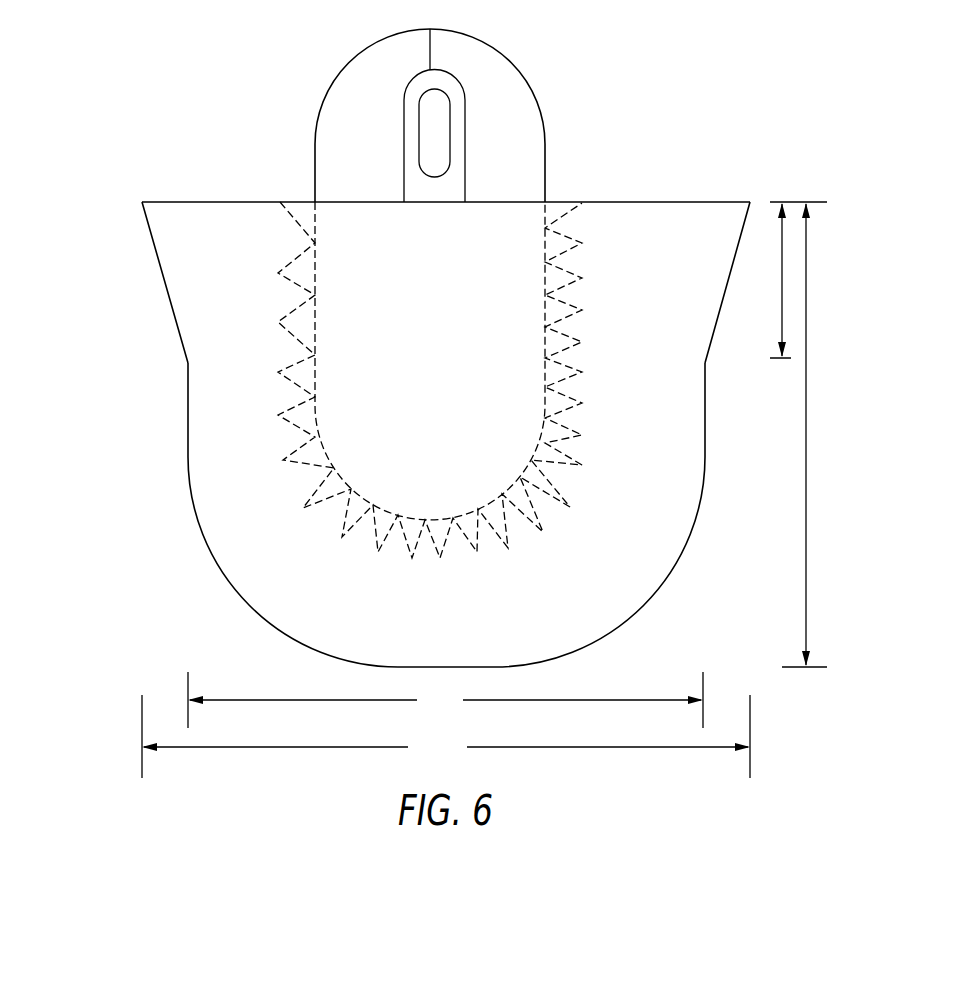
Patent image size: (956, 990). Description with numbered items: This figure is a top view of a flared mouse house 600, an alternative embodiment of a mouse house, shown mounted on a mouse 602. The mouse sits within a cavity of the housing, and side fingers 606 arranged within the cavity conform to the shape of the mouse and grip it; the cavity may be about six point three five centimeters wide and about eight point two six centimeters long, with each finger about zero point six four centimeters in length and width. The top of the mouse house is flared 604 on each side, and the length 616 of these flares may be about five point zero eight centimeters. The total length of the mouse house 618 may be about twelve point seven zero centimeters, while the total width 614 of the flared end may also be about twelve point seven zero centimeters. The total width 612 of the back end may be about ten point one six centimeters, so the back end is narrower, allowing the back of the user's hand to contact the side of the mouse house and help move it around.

The flared mouse house 600 is at (634, 180).
The mouse 602 is at (576, 102).
The flare 604 is at (147, 230).
The side fingers 606 is at (313, 243).
The total width of the back end 612 is at (445, 700).
The total width of the flared end 614 is at (446, 736).
The length of the flares 616 is at (794, 280).
The total length of the mouse house 618 is at (804, 435).